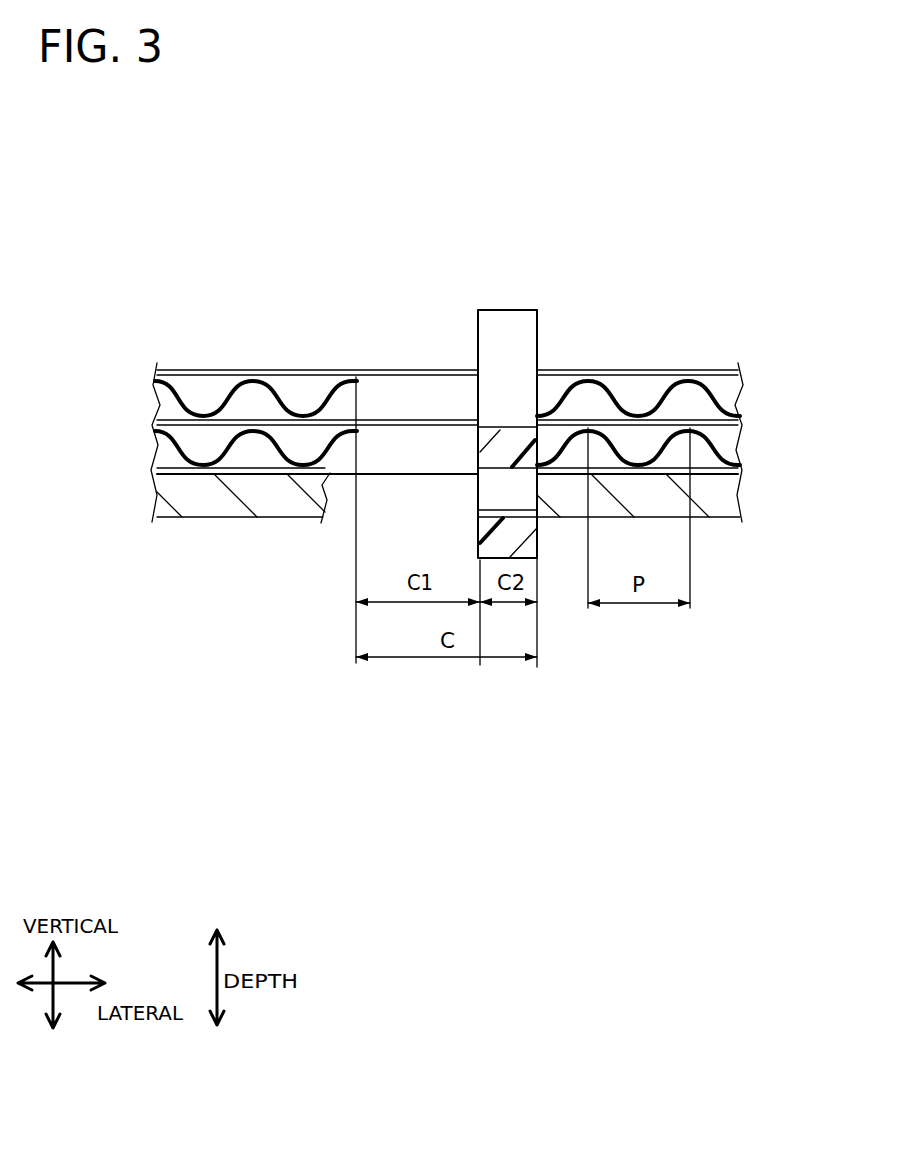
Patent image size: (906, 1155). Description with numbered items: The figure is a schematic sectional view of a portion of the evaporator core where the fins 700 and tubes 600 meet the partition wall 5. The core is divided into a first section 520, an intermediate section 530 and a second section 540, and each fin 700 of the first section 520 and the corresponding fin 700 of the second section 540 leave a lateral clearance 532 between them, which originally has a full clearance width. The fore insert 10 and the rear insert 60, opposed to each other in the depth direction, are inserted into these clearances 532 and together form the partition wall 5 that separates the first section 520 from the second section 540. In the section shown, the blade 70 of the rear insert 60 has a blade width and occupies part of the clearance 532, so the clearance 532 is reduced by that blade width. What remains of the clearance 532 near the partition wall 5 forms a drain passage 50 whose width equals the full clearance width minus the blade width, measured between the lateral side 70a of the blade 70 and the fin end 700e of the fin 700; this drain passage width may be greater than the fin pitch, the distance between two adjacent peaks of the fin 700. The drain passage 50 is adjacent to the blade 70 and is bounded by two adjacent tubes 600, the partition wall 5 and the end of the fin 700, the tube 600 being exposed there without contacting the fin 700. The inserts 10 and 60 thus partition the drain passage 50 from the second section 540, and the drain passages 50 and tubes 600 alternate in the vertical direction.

The partition wall 5 is at (524, 239).
The fore insert 10 is at (551, 580).
The drain passage 50 is at (445, 397).
The rear insert 60 is at (536, 282).
The blade 70 is at (523, 488).
The lateral side of the blade 70a is at (478, 483).
The first section 520 is at (273, 641).
The intermediate section 530 is at (688, 651).
The clearance 532 is at (419, 680).
The second section 540 is at (567, 643).
The tube 600 is at (187, 497).
The fin 700 is at (165, 437).
The fin end 700e is at (356, 440).